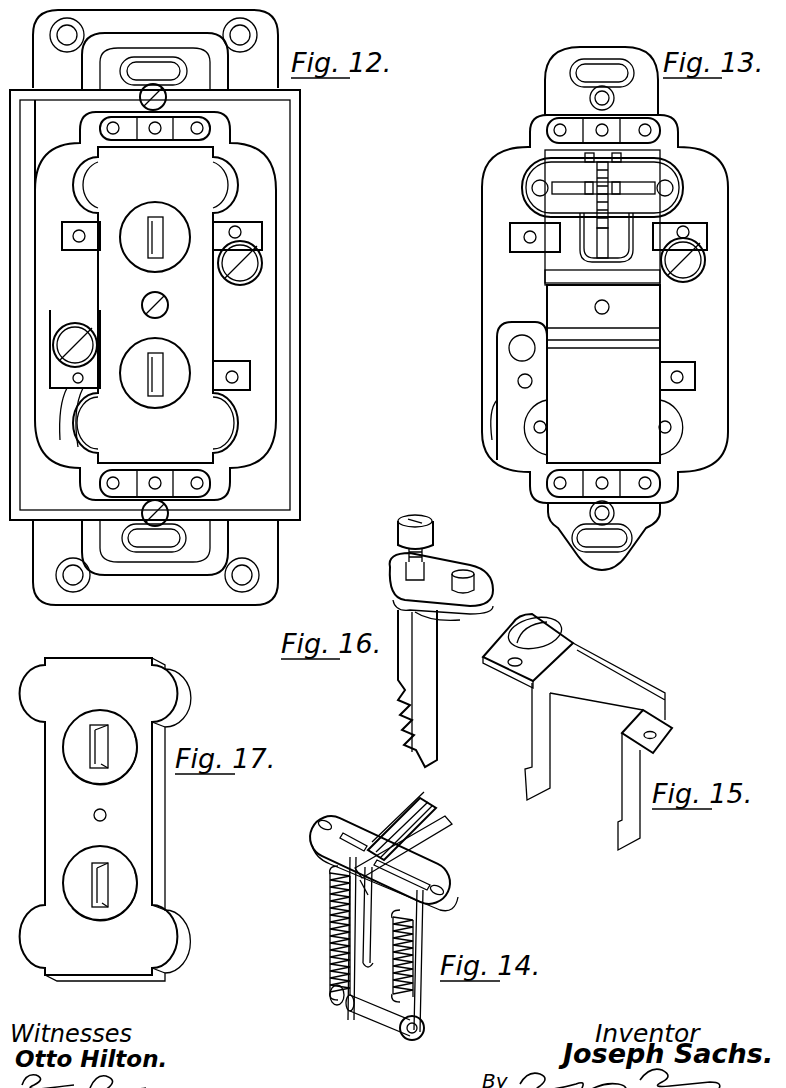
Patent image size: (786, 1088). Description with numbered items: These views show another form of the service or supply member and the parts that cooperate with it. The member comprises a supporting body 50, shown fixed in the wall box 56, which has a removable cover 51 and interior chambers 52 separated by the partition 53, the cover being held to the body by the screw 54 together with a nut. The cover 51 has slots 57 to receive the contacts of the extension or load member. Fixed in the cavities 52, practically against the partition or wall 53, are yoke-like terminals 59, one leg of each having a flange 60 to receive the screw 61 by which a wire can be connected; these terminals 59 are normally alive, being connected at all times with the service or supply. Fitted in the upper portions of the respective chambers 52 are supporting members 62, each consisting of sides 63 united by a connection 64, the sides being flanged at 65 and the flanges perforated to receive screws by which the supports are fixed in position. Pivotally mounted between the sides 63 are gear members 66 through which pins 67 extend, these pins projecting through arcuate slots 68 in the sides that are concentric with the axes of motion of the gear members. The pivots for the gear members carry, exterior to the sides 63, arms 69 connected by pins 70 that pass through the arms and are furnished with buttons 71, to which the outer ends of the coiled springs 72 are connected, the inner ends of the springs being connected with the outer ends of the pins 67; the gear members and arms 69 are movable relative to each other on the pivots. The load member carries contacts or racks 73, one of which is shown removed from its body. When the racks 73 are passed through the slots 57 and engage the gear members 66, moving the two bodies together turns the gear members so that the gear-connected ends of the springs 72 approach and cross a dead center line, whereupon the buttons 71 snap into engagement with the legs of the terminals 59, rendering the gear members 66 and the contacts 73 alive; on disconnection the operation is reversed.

In FIG. 12, the supporting body 50 is at (280, 415).
In FIG. 13, the supporting body 50 is at (484, 328).
In FIG. 12, the removable cover 51 is at (213, 323).
In FIG. 17, the removable cover 51 is at (157, 847).
In FIG. 13, the interior chambers 52 is at (648, 410).
In FIG. 13, the partition 53 is at (640, 322).
In FIG. 12, the screw 54 is at (166, 298).
In FIG. 12, the wall box 56 is at (302, 322).
In FIG. 12, the slots 57 is at (148, 245).
In FIG. 17, the slots 57 is at (105, 752).
In FIG. 13, the yoke-like terminals 59 is at (596, 294).
In FIG. 15, the yoke-like terminals 59 is at (582, 723).
In FIG. 12, the flange 60 is at (245, 222).
In FIG. 13, the flange 60 is at (698, 232).
In FIG. 15, the flange 60 is at (570, 640).
In FIG. 12, the screw 61 is at (68, 332).
In FIG. 13, the screw 61 is at (690, 282).
In FIG. 15, the screw 61 is at (548, 628).
In FIG. 13, the supporting members 62 is at (622, 235).
In FIG. 14, the supporting members 62 is at (450, 852).
In FIG. 14, the sides 63 is at (345, 990).
In FIG. 13, the connection 64 is at (608, 285).
In FIG. 14, the connection 64 is at (446, 818).
In FIG. 13, the flanges 65 is at (685, 175).
In FIG. 14, the flanges 65 is at (340, 820).
In FIG. 13, the gear members 66 is at (609, 185).
In FIG. 14, the gear members 66 is at (350, 918).
In FIG. 14, the pins 67 is at (377, 867).
In FIG. 14, the arcuate slots 68 is at (375, 832).
In FIG. 14, the arms 69 is at (425, 932).
In FIG. 14, the pins 70 is at (380, 1025).
In FIG. 14, the buttons 71 is at (332, 1003).
In FIG. 14, the coiled springs 72 is at (330, 905).
In FIG. 16, the contacts 73 is at (437, 682).